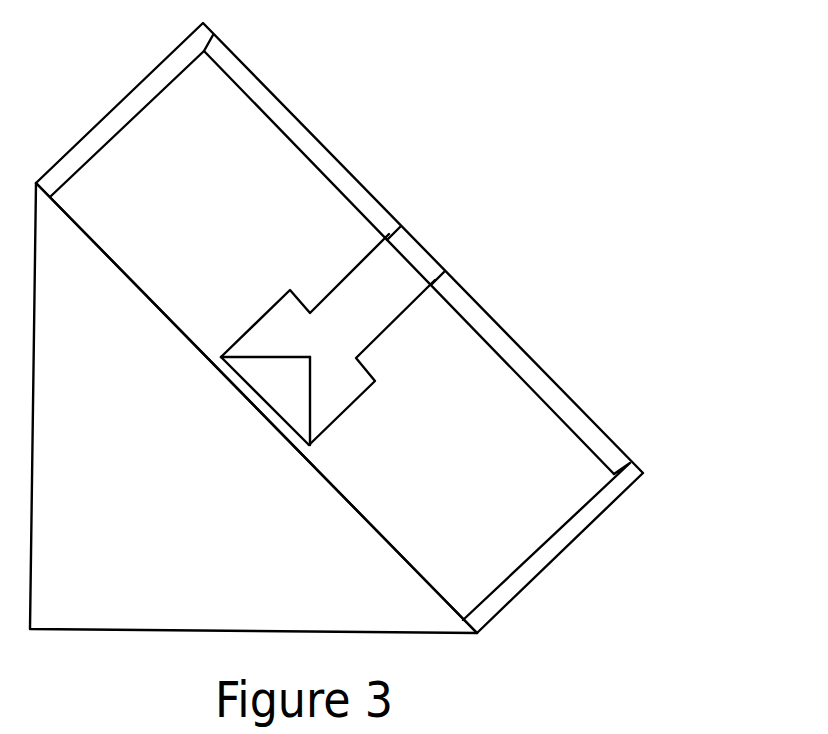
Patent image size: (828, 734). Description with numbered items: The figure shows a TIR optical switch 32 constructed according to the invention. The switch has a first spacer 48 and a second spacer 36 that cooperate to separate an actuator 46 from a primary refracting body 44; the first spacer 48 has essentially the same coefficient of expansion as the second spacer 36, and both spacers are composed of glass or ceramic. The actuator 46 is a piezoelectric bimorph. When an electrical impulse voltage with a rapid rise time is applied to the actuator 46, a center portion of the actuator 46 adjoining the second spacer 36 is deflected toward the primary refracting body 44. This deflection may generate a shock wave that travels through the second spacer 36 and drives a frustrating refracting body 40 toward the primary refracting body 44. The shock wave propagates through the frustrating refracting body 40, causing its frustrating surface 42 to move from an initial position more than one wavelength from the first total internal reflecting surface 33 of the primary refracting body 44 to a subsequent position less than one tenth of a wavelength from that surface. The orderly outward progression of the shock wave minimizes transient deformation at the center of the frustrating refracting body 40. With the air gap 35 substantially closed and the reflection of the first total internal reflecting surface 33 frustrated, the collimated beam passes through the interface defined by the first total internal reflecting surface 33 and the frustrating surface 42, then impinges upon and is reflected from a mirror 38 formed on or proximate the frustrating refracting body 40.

The TIR optical switch 32 is at (530, 197).
The first total internal reflecting surface 33 is at (160, 307).
The air gap 35 is at (300, 447).
The second spacer 36 is at (368, 321).
The mirror 38 is at (310, 383).
The frustrating refracting body 40 is at (302, 410).
The frustrating surface 42 is at (247, 377).
The primary refracting body 44 is at (120, 602).
The actuator 46 is at (498, 343).
The first spacer 48 is at (520, 582).